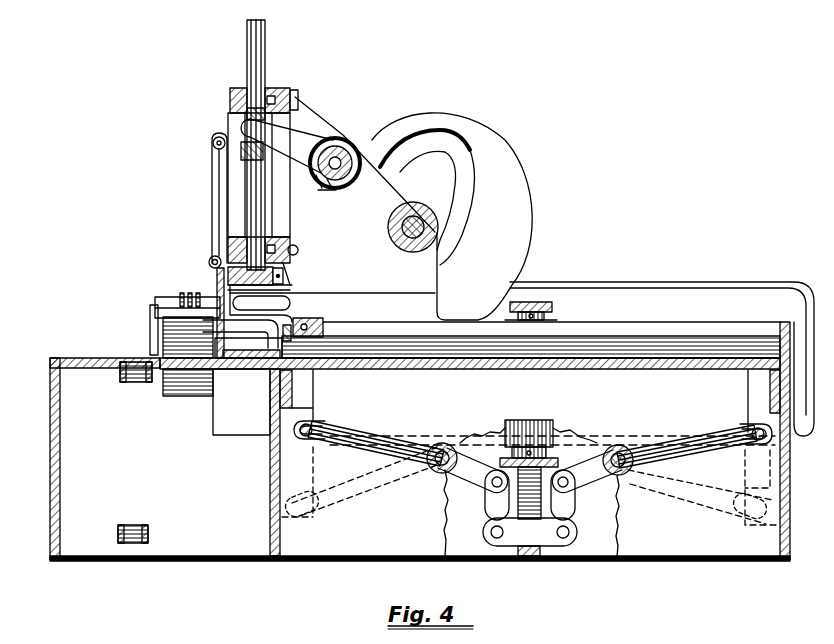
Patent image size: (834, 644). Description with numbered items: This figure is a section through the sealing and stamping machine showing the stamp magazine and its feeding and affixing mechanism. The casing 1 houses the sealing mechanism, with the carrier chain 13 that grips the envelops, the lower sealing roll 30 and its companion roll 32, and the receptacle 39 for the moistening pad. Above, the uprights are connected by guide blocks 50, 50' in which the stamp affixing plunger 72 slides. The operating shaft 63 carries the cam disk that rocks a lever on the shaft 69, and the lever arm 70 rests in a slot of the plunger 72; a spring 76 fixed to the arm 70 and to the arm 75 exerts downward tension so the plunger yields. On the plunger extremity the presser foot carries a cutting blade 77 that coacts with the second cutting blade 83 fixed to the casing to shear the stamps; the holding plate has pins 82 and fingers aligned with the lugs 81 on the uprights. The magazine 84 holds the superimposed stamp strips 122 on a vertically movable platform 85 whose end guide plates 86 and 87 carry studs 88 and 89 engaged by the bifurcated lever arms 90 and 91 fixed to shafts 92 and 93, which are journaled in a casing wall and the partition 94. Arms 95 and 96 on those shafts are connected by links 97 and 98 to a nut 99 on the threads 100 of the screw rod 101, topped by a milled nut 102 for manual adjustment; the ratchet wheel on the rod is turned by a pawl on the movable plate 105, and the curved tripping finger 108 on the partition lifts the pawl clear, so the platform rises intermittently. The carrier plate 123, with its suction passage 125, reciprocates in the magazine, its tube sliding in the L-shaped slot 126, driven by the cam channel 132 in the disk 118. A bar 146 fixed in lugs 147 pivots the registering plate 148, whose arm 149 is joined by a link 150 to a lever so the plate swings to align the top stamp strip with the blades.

The casing 1 is at (50, 455).
The sprocket or carrier chain 13 is at (135, 383).
The lower sealing roll 30 is at (190, 396).
The companion roll 32 is at (160, 357).
The receptacle 39 is at (232, 436).
The guide block 50 is at (269, 92).
The guide block 50' is at (277, 188).
The operating shaft 63 is at (428, 248).
The shaft 69 is at (341, 142).
The lever arm 70 is at (302, 128).
The plunger 72 is at (266, 33).
The arm 75 is at (318, 181).
The spring 76 is at (354, 182).
The cutting blade 77 is at (292, 287).
The lugs 81 is at (290, 290).
The pins 82 is at (283, 270).
The second cutting blade 83 is at (272, 336).
The magazine 84 is at (774, 334).
The floor or platform 85 is at (594, 370).
The guide plate 86 is at (748, 410).
The guide plate 87 is at (314, 388).
The lateral stud 88 is at (790, 437).
The lateral stud 89 is at (318, 424).
The lever arm 90 is at (713, 455).
The lever arm 91 is at (345, 450).
The shaft 92 is at (623, 476).
The shaft 93 is at (430, 474).
The partition 94 is at (552, 416).
The arm 95 is at (590, 487).
The arm 96 is at (472, 476).
The link 97 is at (575, 522).
The link 98 is at (484, 513).
The nut 99 is at (508, 536).
The threads 100 is at (541, 550).
The screw rod 101 is at (540, 302).
The milled nut 102 is at (556, 313).
The movable plate 105 is at (558, 459).
The curved tripping finger 108 is at (497, 458).
The disk 118 is at (508, 161).
The stamp strips 122 is at (675, 337).
The carrier plate 123 is at (326, 336).
The passage 125 is at (318, 321).
The L-shaped slot 126 is at (318, 303).
The cam channel 132 is at (461, 215).
The bar 146 is at (209, 261).
The lugs 147 is at (217, 275).
The registering plate 148 is at (220, 287).
The arm 149 is at (212, 181).
The link 150 is at (215, 136).